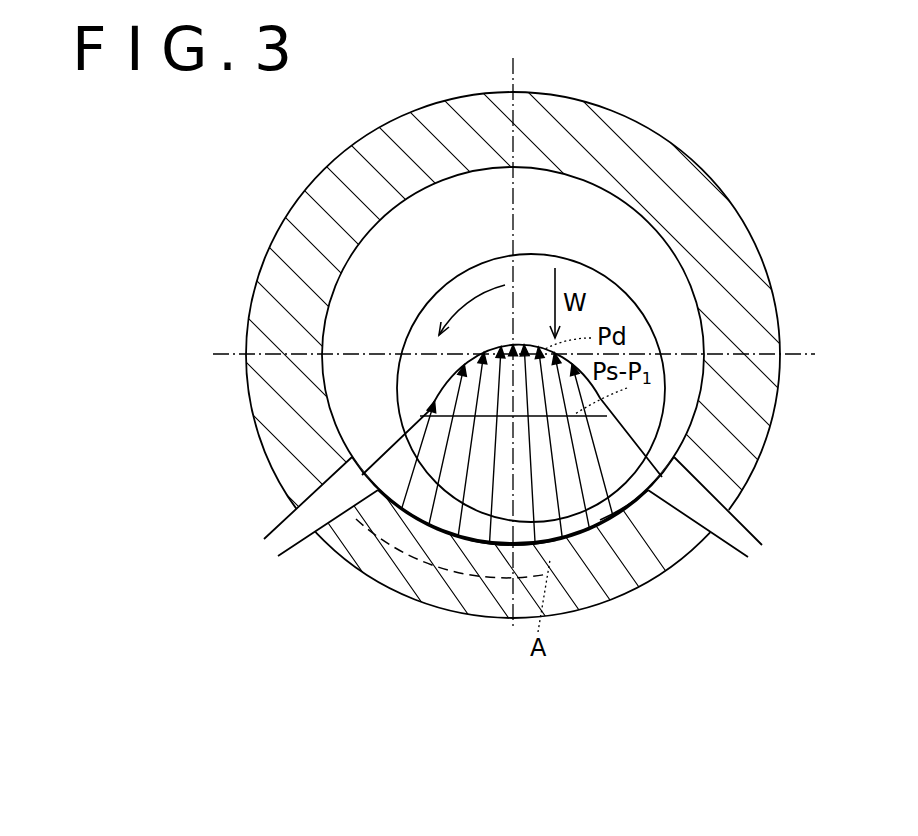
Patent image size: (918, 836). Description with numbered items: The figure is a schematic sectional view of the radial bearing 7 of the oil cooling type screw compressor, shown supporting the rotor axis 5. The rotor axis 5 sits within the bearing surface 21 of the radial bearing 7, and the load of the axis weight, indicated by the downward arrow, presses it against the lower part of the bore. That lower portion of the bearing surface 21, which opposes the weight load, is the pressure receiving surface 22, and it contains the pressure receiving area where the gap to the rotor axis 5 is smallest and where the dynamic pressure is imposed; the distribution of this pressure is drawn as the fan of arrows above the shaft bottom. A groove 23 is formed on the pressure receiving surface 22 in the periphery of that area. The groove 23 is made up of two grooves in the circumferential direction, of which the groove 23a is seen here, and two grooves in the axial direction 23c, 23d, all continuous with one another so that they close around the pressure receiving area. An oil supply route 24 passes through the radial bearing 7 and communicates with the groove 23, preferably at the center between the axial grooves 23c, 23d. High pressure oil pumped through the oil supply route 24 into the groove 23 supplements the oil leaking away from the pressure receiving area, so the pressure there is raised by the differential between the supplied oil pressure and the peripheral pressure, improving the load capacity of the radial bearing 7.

The rotor axis 5 is at (655, 333).
The radial bearing 7 is at (306, 183).
The bearing surface 21 is at (663, 223).
The pressure receiving surface 22 is at (320, 400).
The groove 23 is at (622, 686).
The groove in the circumferential direction 23a is at (493, 578).
The groove in the axial direction 23c is at (384, 542).
The groove in the axial direction 23d is at (640, 548).
The oil supply route 24 is at (283, 520).